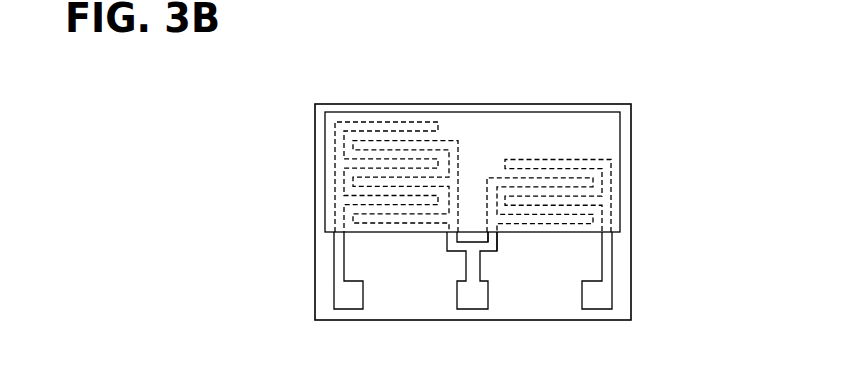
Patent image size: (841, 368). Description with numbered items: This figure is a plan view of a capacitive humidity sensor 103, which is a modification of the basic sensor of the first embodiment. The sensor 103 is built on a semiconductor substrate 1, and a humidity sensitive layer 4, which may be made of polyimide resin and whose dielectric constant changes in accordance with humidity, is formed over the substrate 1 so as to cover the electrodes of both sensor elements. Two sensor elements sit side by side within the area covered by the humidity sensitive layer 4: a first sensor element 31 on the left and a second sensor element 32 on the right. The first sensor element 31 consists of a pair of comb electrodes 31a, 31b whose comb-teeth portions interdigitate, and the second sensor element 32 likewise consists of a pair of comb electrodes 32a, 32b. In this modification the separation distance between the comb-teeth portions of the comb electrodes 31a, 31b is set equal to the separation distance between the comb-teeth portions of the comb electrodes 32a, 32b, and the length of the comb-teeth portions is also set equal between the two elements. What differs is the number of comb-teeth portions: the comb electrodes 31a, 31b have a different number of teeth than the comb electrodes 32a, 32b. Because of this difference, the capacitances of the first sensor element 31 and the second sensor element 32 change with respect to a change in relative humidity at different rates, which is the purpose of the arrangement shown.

The capacitive humidity sensor 103 is at (293, 95).
The semiconductor substrate 1 is at (560, 300).
The humidity sensitive layer 4 is at (609, 118).
The first sensor element 31 is at (458, 98).
The second sensor element 32 is at (613, 98).
The comb electrode 31a is at (337, 228).
The comb electrode 31b is at (452, 228).
The comb electrode 32a is at (498, 236).
The comb electrode 32b is at (603, 228).